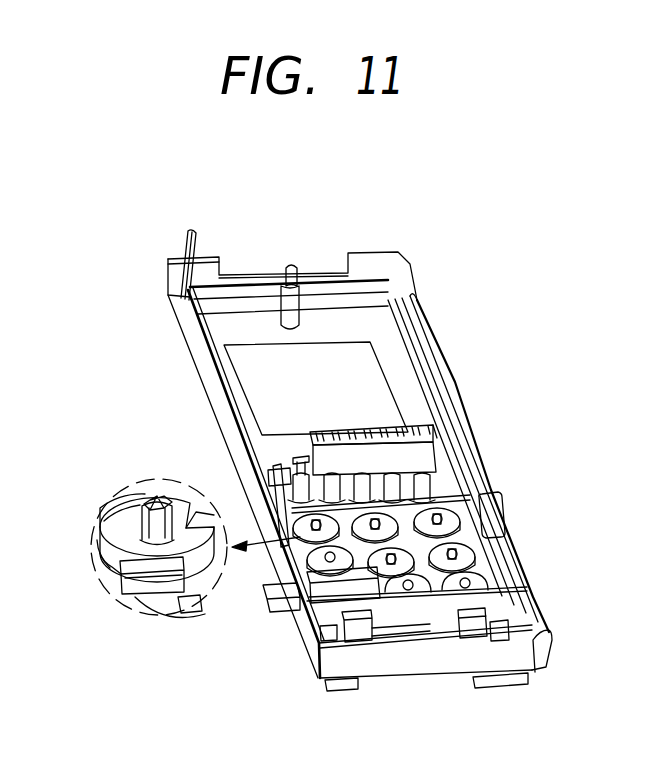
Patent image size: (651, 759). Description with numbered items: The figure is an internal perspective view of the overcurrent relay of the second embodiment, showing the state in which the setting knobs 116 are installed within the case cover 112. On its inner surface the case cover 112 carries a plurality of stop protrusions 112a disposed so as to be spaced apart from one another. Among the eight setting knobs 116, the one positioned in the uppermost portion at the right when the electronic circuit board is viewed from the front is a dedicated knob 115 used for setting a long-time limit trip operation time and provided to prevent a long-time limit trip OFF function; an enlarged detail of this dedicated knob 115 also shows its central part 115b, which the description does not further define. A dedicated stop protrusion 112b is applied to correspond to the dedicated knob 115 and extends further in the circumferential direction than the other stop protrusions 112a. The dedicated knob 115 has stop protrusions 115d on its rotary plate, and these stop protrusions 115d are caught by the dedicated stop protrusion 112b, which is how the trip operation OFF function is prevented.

The case cover 112 is at (216, 422).
The stop protrusions 112a is at (465, 568).
The dedicated stop protrusion 112b is at (319, 623).
The dedicated knob 115 is at (117, 528).
The shaft 115b is at (140, 502).
The stop protrusions 115d is at (110, 567).
The setting knobs 116 is at (433, 491).